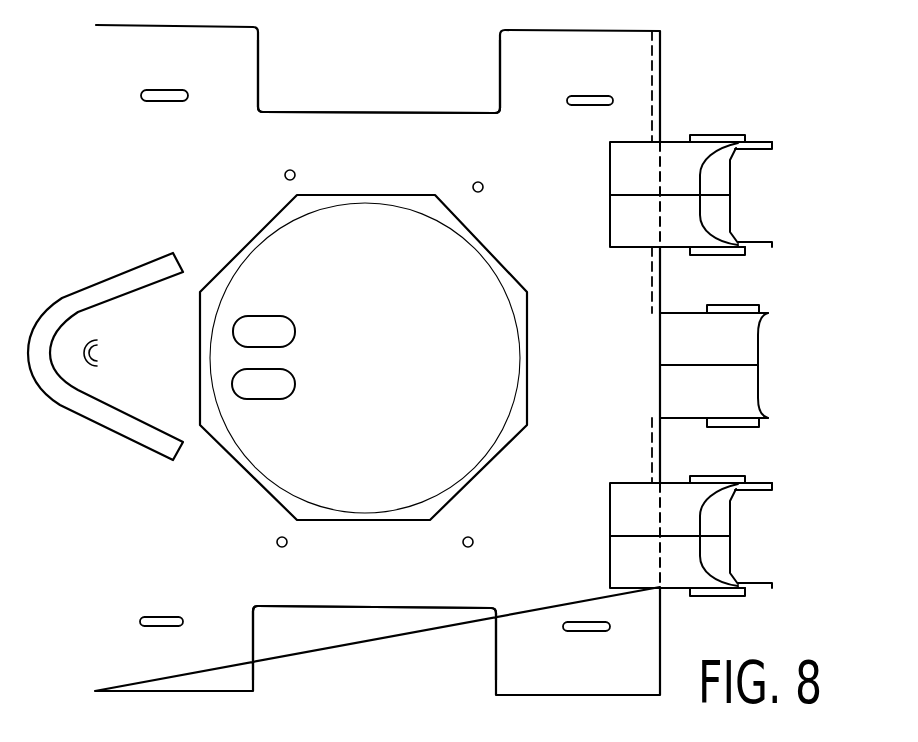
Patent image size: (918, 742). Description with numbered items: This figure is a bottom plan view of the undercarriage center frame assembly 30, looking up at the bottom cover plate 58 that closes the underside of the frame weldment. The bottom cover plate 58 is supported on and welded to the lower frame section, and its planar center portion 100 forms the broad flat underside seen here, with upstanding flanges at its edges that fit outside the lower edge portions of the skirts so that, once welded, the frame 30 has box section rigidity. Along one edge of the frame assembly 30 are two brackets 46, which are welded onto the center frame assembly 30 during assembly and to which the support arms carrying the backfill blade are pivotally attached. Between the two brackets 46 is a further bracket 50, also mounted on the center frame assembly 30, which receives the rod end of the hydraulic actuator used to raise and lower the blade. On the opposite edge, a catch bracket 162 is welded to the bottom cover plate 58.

The undercarriage center frame assembly 30 is at (303, 84).
The bottom cover plate 58 is at (393, 140).
The planar center portion 100 is at (333, 585).
The brackets 46 is at (675, 160).
The bracket 50 is at (692, 392).
The catch bracket 162 is at (53, 323).